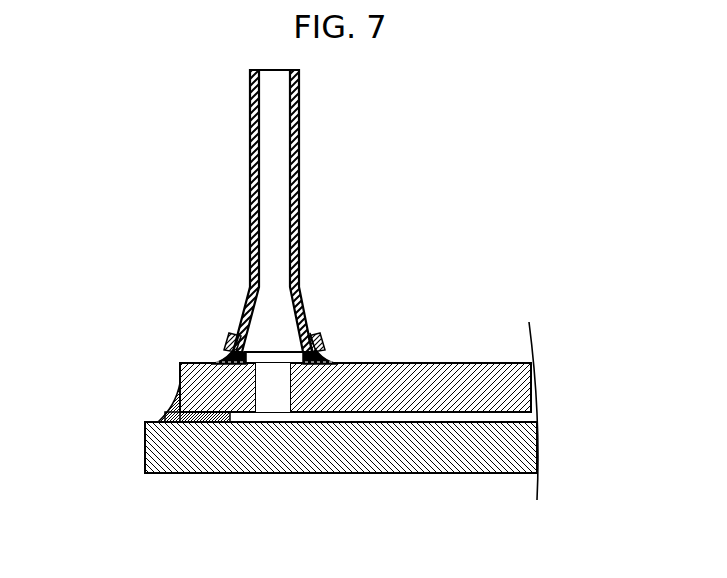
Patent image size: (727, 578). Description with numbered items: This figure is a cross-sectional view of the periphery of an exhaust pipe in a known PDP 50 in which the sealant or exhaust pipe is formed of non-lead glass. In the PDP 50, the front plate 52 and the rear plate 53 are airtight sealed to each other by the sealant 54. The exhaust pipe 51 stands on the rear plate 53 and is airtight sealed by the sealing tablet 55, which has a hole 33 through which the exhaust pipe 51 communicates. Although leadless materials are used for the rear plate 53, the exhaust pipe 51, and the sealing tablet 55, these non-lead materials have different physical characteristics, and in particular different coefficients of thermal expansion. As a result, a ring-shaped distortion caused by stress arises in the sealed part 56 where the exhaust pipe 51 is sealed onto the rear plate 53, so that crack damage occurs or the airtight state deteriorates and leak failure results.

The PDP 50 is at (185, 167).
The exhaust pipe 51 is at (298, 178).
The front plate 52 is at (375, 448).
The rear plate 53 is at (425, 385).
The sealant 54 is at (168, 413).
The sealing tablet 55 is at (223, 357).
The sealed part 56 is at (212, 362).
The hole 33 is at (270, 358).